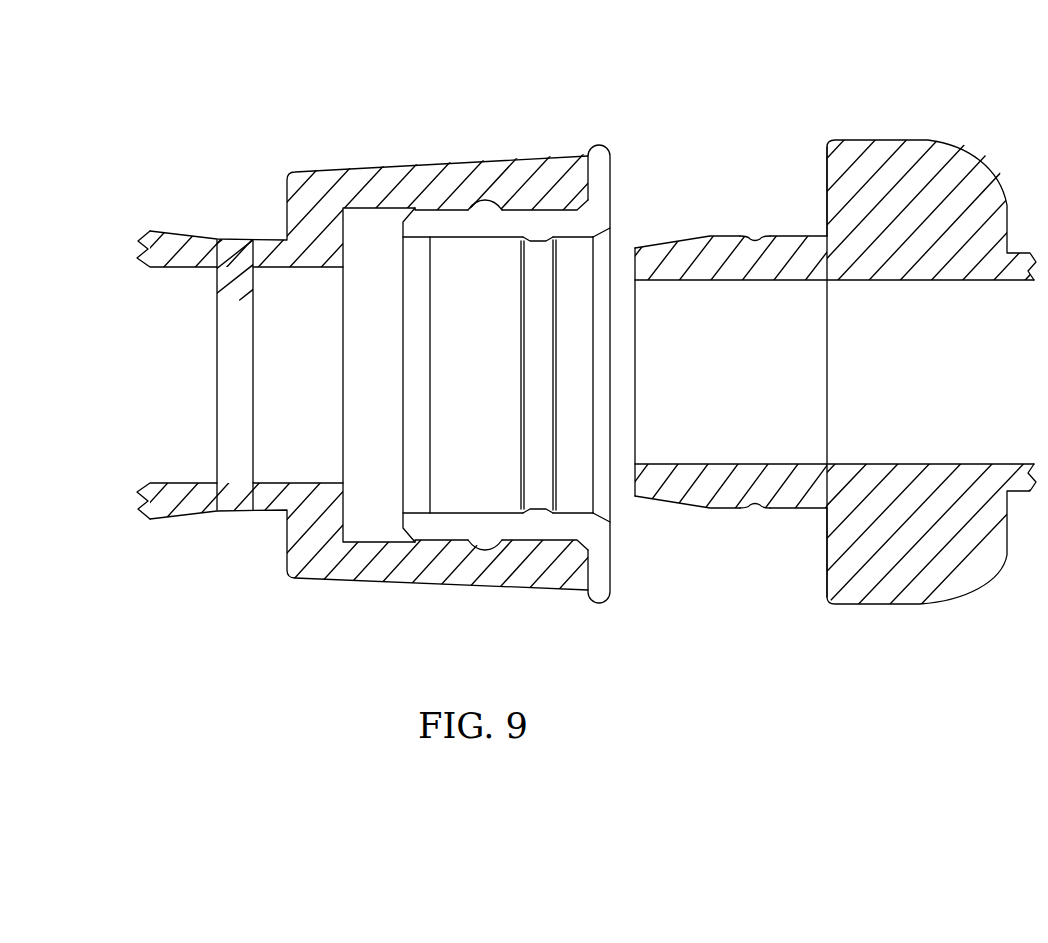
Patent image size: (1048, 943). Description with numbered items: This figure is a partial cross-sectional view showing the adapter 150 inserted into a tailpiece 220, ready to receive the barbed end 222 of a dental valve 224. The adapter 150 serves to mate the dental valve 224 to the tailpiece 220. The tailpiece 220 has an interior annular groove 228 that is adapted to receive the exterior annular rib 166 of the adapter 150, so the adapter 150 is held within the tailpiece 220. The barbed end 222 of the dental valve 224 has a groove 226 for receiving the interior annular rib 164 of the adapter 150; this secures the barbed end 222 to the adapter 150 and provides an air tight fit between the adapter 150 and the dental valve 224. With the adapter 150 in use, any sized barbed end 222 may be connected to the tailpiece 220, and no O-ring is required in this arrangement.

The adapter 150 is at (535, 326).
The interior annular rib 164 is at (537, 244).
The exterior annular rib 166 is at (482, 214).
The tailpiece 220 is at (369, 377).
The barbed end 222 is at (802, 350).
The dental valve 224 is at (925, 115).
The groove 226 is at (720, 192).
The interior annular groove 228 is at (485, 200).